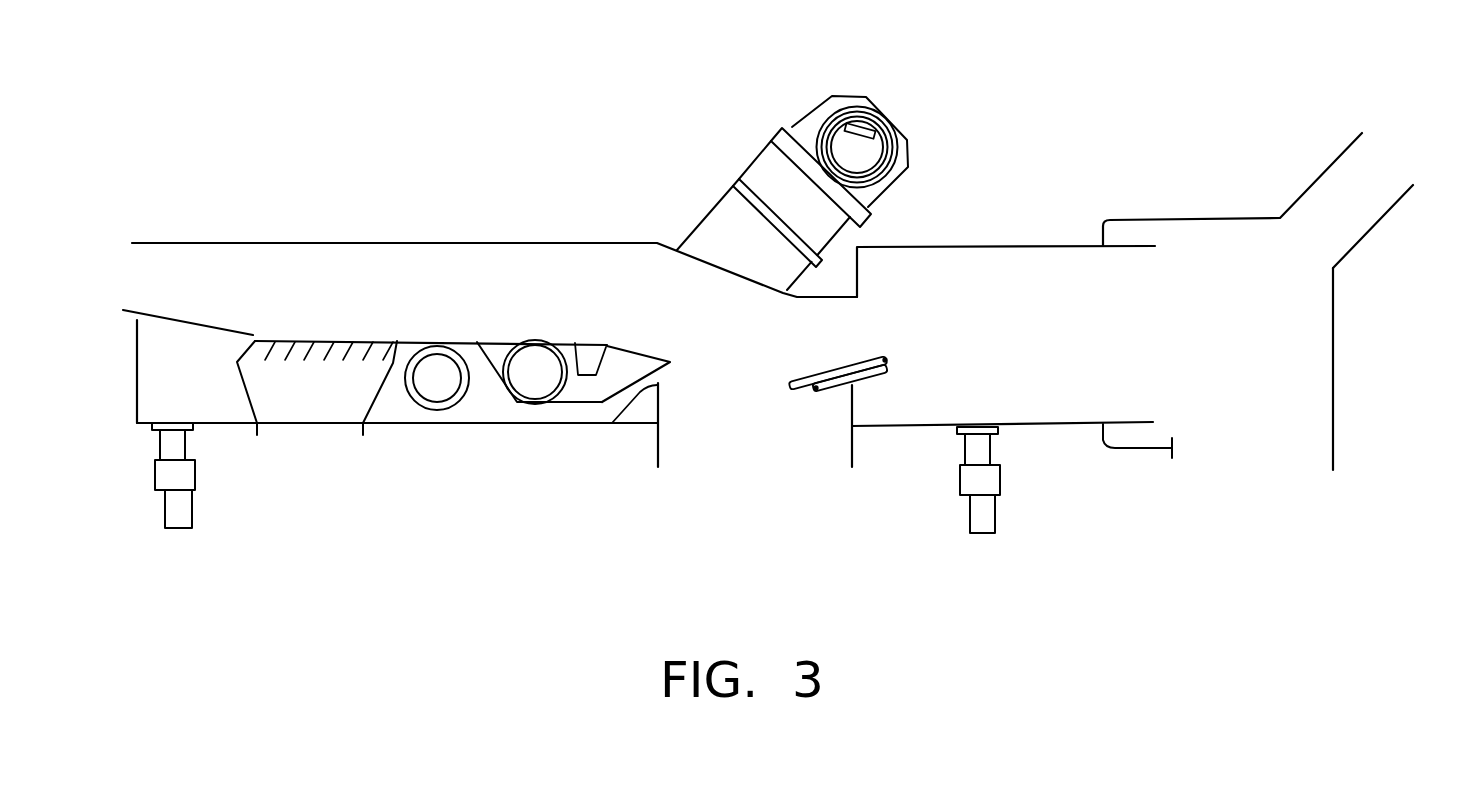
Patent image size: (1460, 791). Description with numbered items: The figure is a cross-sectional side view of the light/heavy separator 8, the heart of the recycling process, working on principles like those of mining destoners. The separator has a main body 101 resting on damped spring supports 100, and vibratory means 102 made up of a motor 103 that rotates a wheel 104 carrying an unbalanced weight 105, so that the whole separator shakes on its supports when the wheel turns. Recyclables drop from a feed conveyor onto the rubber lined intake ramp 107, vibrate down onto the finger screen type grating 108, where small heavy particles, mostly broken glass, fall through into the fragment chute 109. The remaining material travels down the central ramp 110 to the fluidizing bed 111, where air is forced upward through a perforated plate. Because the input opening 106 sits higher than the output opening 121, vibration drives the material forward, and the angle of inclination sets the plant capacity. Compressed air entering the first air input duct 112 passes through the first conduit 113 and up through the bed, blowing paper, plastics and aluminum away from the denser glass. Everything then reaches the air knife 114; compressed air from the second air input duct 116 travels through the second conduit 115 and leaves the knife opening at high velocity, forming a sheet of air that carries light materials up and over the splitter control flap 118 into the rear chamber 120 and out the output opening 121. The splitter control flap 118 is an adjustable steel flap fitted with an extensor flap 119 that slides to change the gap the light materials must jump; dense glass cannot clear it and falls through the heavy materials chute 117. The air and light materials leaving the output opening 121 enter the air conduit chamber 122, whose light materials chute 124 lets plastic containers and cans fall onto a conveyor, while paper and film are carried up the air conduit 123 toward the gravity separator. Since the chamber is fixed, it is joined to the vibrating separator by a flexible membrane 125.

The light/heavy separator 8 is at (567, 120).
The damped spring supports 100 is at (155, 478).
The main body 101 is at (173, 237).
The vibratory means 102 is at (757, 170).
The motor 103 is at (908, 165).
The wheel 104 is at (867, 150).
The unbalanced weight 105 is at (848, 125).
The input opening 106 is at (148, 280).
The intake ramp 107 is at (197, 330).
The finger screen type grating 108 is at (350, 342).
The fragment chute 109 is at (287, 387).
The central ramp 110 is at (497, 342).
The fluidizing bed 111 is at (632, 350).
The first air input duct 112 is at (527, 373).
The first conduit 113 is at (585, 377).
The air knife 114 is at (647, 379).
The second conduit 115 is at (460, 415).
The second air input duct 116 is at (430, 388).
The heavy materials chute 117 is at (780, 433).
The splitter control flap 118 is at (862, 372).
The extensor flap 119 is at (813, 373).
The rear chamber 120 is at (967, 257).
The output opening 121 is at (1143, 272).
The air conduit chamber 122 is at (1338, 363).
The air conduit 123 is at (1373, 230).
The light materials chute 124 is at (1245, 442).
The flexible membrane 125 is at (1115, 450).